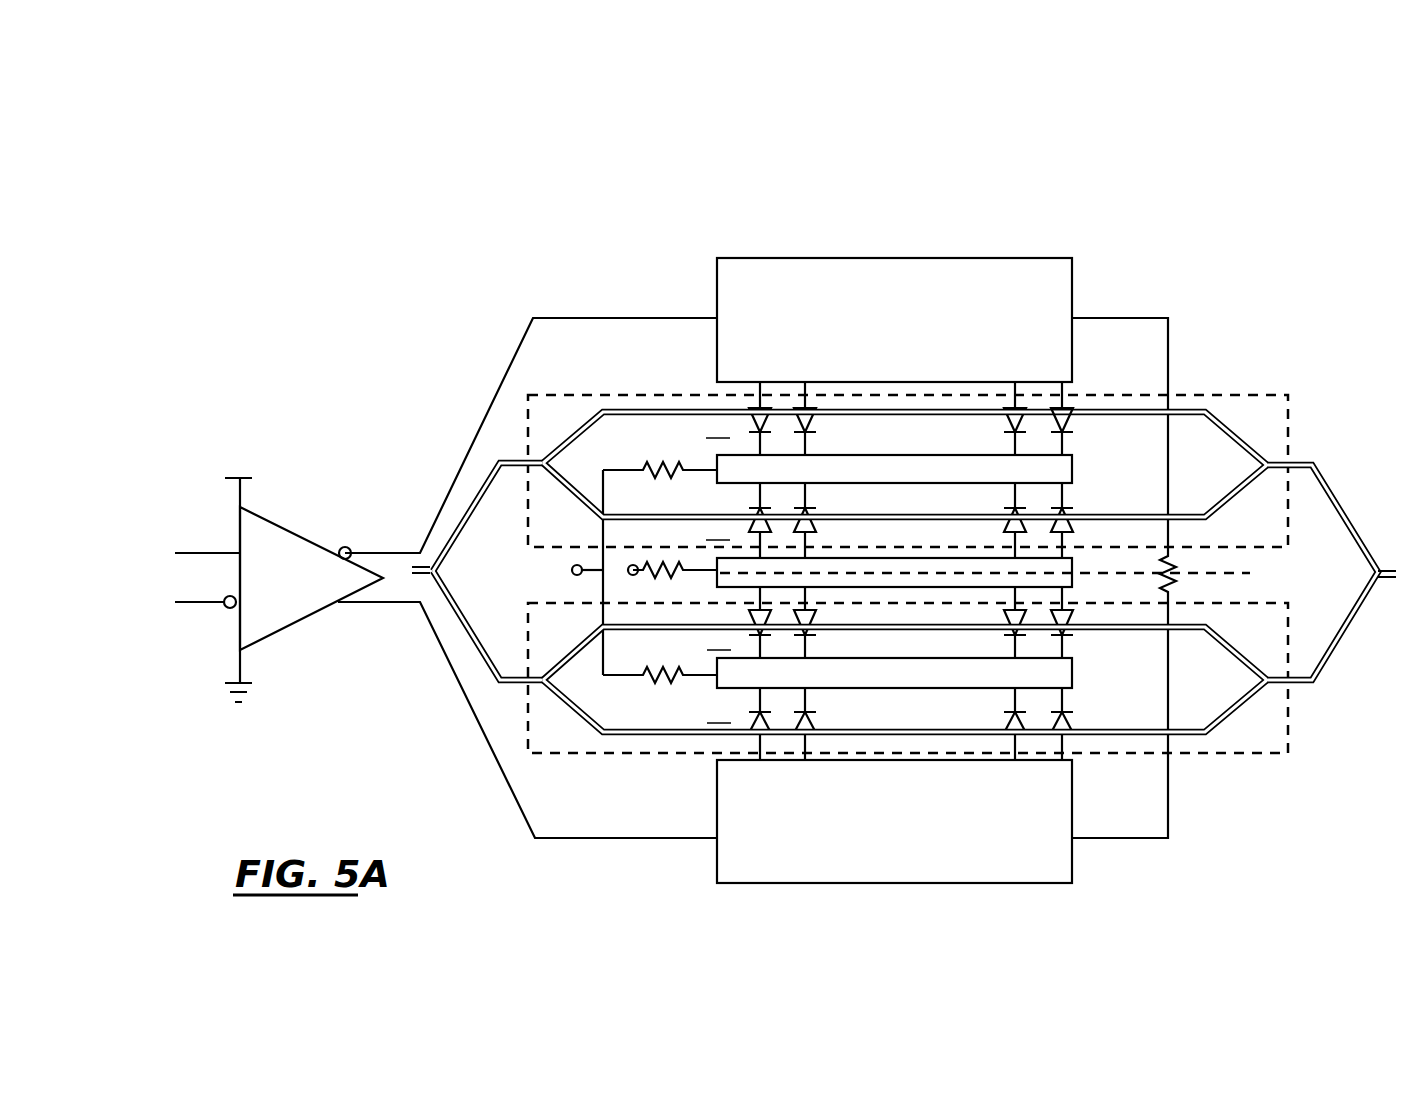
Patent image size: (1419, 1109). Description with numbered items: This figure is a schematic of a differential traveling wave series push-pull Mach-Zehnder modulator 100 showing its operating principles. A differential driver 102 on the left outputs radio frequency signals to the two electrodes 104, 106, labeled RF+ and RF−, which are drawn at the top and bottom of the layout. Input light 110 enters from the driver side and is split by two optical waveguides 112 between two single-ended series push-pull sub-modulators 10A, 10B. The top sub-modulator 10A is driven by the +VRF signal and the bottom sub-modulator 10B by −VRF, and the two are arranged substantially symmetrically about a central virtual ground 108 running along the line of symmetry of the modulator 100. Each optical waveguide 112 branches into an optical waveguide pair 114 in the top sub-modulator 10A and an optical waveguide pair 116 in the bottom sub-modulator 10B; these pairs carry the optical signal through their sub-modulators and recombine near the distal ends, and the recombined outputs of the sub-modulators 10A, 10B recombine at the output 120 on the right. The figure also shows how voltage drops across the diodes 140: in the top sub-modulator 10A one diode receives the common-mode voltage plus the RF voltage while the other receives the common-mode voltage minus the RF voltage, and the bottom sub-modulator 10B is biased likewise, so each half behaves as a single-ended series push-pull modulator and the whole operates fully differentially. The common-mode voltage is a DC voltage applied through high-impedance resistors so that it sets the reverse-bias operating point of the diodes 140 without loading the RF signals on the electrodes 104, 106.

The differential series push-pull modulator 100 is at (858, 108).
The differential driver 102 is at (238, 418).
The electrode 104 is at (1022, 258).
The electrode 106 is at (1035, 883).
The virtual ground 108 is at (1110, 572).
The single-ended series push-pull sub-modulator 10A is at (560, 395).
The single-ended series push-pull sub-modulator 10B is at (528, 750).
The input light 110 is at (418, 573).
The optical waveguides 112 is at (490, 490).
The optical waveguide pair 114 is at (577, 430).
The optical waveguide pair 116 is at (573, 652).
The output 120 is at (1371, 590).
The diodes 140 is at (1068, 418).